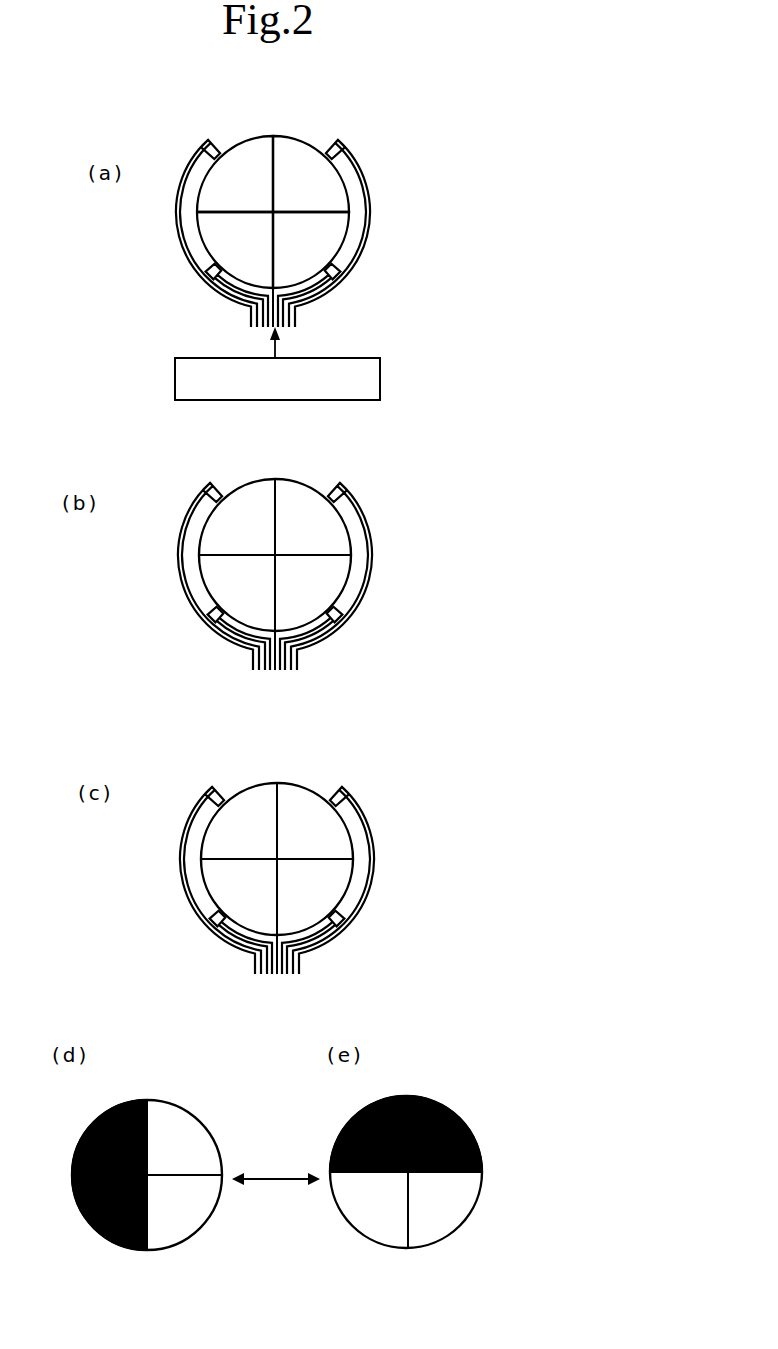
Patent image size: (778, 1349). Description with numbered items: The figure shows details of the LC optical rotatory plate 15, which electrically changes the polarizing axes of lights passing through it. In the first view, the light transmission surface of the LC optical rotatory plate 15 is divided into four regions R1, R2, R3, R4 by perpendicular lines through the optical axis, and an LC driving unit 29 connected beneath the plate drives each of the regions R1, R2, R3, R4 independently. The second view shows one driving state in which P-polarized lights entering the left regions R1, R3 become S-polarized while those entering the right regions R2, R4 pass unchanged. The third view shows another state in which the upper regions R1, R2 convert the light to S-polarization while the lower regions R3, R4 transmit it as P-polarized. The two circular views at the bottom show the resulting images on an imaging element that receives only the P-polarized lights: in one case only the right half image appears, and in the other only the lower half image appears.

The LC optical rotatory plate 15 is at (300, 539).
The LC driving unit 29 is at (357, 358).
The region R1 is at (235, 174).
The region R2 is at (311, 174).
The region R3 is at (235, 250).
The region R4 is at (311, 250).